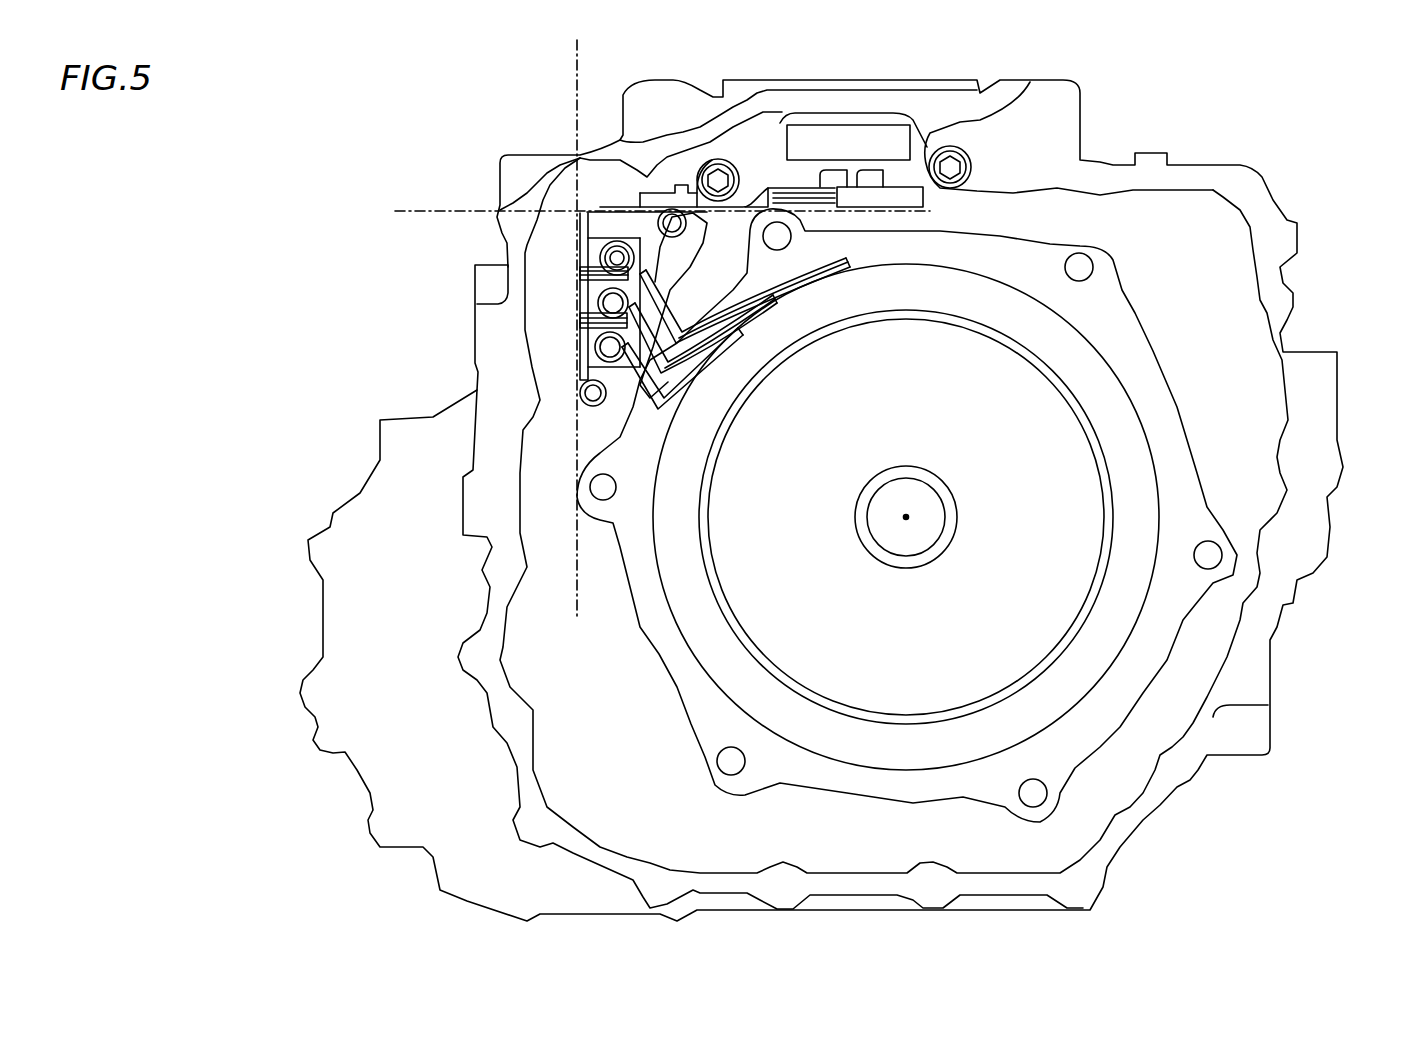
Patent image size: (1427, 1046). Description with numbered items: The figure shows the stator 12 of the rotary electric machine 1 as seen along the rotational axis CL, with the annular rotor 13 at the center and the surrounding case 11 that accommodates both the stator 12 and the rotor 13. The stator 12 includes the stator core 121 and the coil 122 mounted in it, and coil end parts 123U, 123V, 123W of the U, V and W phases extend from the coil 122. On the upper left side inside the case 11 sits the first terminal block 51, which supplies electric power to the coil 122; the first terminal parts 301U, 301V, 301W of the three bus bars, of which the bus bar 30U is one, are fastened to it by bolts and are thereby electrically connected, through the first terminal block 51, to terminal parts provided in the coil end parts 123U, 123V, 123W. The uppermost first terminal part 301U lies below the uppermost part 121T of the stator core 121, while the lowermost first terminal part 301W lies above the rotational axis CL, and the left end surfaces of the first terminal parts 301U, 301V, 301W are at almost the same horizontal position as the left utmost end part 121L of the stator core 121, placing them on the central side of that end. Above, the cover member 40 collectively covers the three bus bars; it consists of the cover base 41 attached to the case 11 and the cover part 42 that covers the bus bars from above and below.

The rotary electric machine 1 is at (1203, 96).
The case 11 is at (1255, 174).
The stator 12 is at (1178, 463).
The stator core 121 is at (1093, 310).
The coil 122 is at (1100, 647).
The rotor 13 is at (1010, 663).
The rotational axis CL is at (909, 520).
The left utmost end part 121L is at (577, 328).
The uppermost part 121T is at (636, 216).
The bus bar 30U is at (766, 192).
The cover base 41 is at (904, 137).
The cover part 42 is at (923, 193).
The cover member 40 is at (927, 172).
The first terminal block 51 is at (582, 378).
The first terminal part 301U is at (598, 258).
The first terminal part 301V is at (596, 302).
The first terminal part 301W is at (593, 348).
The coil end part 123U is at (762, 304).
The coil end part 123V is at (720, 353).
The coil end part 123W is at (660, 417).